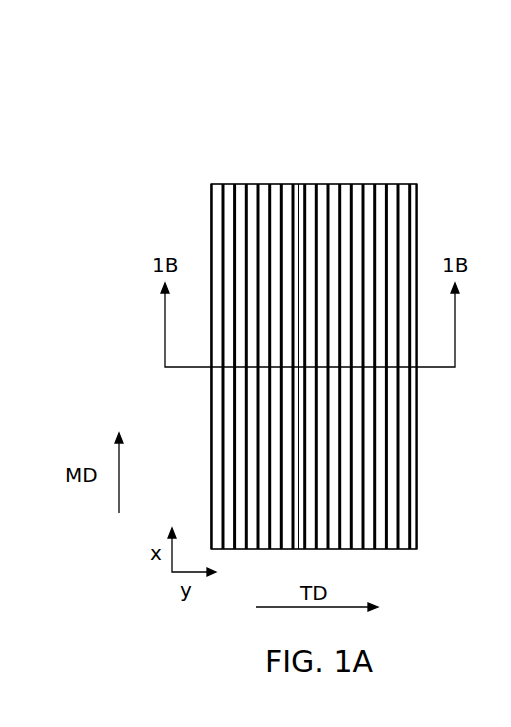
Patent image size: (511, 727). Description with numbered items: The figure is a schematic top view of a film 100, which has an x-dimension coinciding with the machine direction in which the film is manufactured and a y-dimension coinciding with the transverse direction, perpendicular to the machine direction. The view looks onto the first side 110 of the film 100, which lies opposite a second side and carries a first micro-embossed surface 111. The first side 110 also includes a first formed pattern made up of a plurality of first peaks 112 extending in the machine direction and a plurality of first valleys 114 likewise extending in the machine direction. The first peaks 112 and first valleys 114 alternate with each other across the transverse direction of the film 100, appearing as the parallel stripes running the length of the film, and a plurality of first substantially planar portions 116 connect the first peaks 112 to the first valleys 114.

The film 100 is at (188, 78).
The first side 110 is at (212, 185).
The first micro-embossed surface 111 is at (410, 184).
The first peaks 112 is at (292, 184).
The first valleys 114 is at (302, 184).
The first substantially planar portions 116 is at (295, 184).